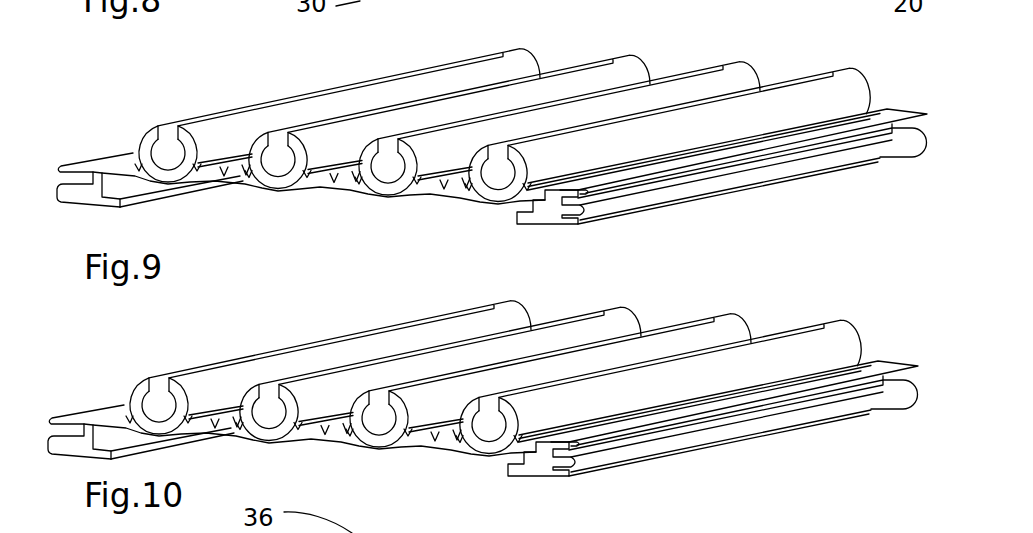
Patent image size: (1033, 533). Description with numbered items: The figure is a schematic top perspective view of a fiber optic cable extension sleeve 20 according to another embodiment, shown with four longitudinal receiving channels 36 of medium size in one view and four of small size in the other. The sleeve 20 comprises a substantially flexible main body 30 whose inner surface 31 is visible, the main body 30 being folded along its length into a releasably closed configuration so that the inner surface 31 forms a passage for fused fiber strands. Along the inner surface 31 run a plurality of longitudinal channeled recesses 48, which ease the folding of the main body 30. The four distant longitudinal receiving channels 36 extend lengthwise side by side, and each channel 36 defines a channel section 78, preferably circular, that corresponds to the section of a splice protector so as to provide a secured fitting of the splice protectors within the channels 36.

In FIG. 9, the fiber optic cable extension sleeve 20 is at (798, 198).
In FIG. 10, the fiber optic cable extension sleeve 20 is at (713, 443).
In FIG. 9, the substantially flexible main body 30 is at (410, 186).
In FIG. 10, the substantially flexible main body 30 is at (328, 455).
In FIG. 9, the inner surface 31 is at (124, 150).
In FIG. 10, the inner surface 31 is at (141, 432).
In FIG. 9, the longitudinal receiving channels 36 is at (650, 62).
In FIG. 10, the longitudinal receiving channels 36 is at (505, 330).
In FIG. 9, the longitudinal channeled recesses 48 is at (335, 178).
In FIG. 10, the longitudinal channeled recesses 48 is at (326, 461).
In FIG. 9, the channel section 78 is at (497, 173).